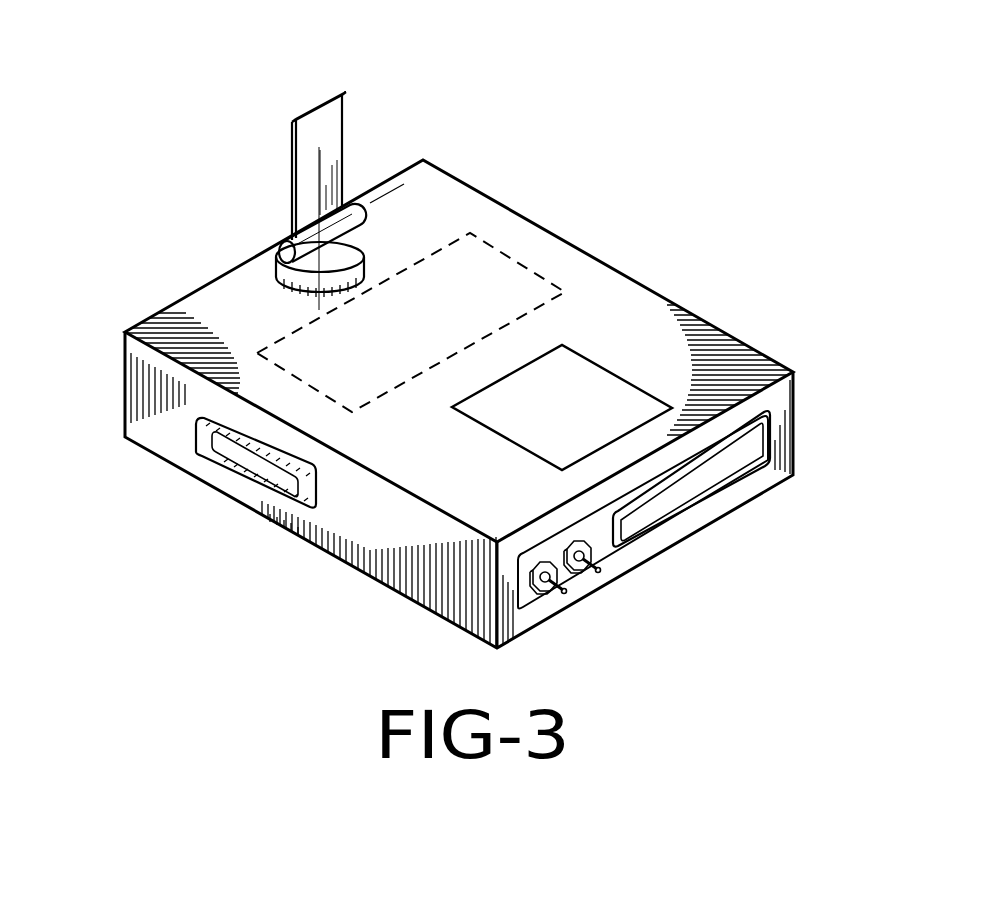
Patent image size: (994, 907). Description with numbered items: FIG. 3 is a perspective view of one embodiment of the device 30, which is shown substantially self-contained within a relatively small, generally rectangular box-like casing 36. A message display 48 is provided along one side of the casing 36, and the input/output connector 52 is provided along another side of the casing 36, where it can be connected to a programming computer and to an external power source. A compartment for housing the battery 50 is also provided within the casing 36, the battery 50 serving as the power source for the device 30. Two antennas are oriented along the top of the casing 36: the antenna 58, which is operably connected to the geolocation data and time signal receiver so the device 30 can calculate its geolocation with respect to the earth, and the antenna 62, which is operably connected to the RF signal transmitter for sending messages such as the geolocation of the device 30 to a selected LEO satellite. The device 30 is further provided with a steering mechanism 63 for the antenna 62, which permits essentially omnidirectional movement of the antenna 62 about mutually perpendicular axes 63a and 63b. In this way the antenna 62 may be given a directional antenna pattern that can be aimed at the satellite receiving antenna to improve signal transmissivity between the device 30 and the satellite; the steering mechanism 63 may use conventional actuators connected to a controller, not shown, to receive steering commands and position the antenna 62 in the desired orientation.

The device 30 is at (450, 329).
The casing 36 is at (620, 270).
The message display 48 is at (678, 490).
The battery 50 is at (475, 298).
The input/output connector 52 is at (248, 457).
The antenna 58 is at (618, 420).
The antenna 62 is at (342, 138).
The steering mechanism 63 is at (307, 219).
The axis 63a is at (282, 236).
The axis 63b is at (372, 203).